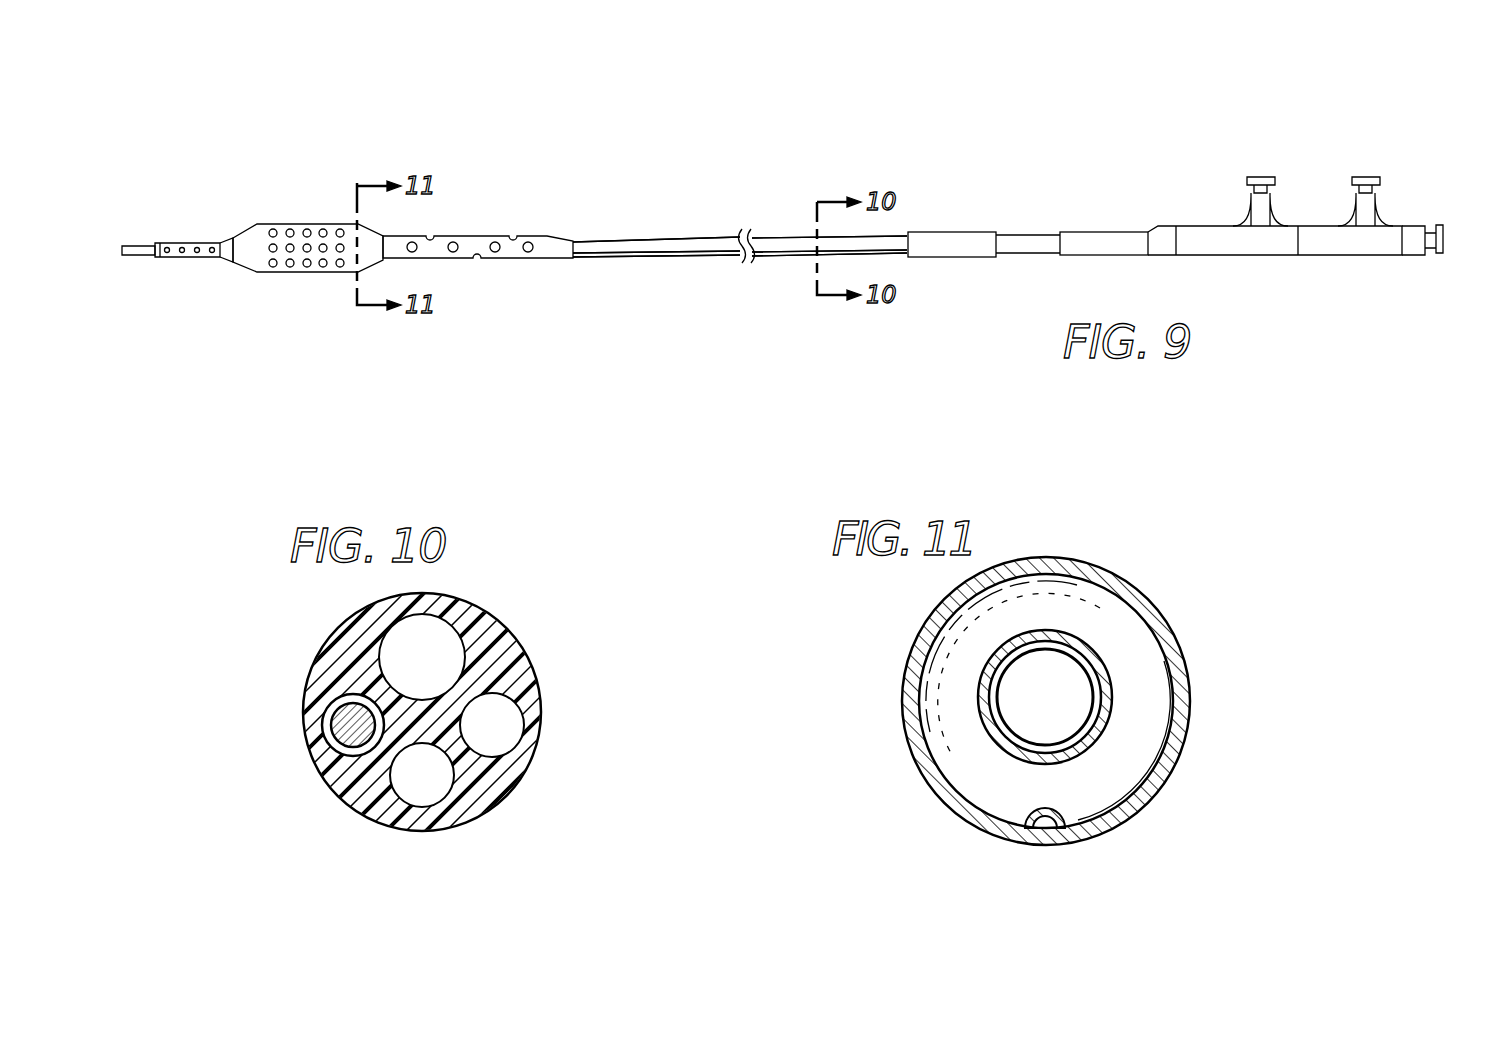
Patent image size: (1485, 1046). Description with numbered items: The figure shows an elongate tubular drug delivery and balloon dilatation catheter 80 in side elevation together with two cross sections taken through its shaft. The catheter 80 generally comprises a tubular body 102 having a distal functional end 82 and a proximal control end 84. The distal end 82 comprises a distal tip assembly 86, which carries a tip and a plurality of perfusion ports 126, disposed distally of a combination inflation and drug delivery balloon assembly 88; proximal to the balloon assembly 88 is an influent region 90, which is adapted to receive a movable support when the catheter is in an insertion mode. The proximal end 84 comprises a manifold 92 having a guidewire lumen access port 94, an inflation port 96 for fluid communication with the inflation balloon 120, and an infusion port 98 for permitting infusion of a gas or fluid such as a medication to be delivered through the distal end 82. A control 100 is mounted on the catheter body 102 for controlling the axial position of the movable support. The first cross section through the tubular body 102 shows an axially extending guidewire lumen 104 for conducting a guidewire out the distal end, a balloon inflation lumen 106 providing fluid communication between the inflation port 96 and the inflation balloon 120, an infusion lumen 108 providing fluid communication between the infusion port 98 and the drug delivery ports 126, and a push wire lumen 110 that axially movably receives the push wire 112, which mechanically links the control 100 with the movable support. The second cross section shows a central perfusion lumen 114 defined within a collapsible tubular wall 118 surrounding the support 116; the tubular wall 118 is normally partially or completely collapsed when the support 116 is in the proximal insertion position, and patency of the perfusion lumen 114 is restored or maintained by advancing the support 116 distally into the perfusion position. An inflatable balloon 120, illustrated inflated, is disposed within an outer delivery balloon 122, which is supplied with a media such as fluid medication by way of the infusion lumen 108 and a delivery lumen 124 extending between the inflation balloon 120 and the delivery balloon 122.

In FIG. 9, the drug delivery and balloon dilatation catheter 80 is at (620, 185).
In FIG. 9, the distal functional end 82 is at (302, 195).
In FIG. 9, the proximal control end 84 is at (1313, 184).
In FIG. 9, the distal tip assembly 86 is at (180, 292).
In FIG. 9, the combination inflation and drug delivery balloon assembly 88 is at (322, 231).
In FIG. 9, the influent region 90 is at (486, 292).
In FIG. 9, the manifold 92 is at (1262, 250).
In FIG. 9, the guidewire lumen access port 94 is at (1443, 236).
In FIG. 9, the inflation port 96 is at (1265, 177).
In FIG. 9, the infusion port 98 is at (1365, 172).
In FIG. 9, the control 100 is at (955, 248).
In FIG. 9, the tubular body 102 is at (630, 256).
In FIG. 10, the tubular body 102 is at (522, 640).
In FIG. 10, the guidewire lumen 104 is at (430, 648).
In FIG. 10, the balloon inflation lumen 106 is at (500, 725).
In FIG. 10, the infusion lumen 108 is at (432, 790).
In FIG. 10, the push wire lumen 110 is at (352, 697).
In FIG. 10, the push wire 112 is at (360, 733).
In FIG. 11, the central perfusion lumen 114 is at (1060, 688).
In FIG. 11, the support 116 is at (1097, 738).
In FIG. 11, the collapsible tubular wall 118 is at (1078, 642).
In FIG. 11, the inflatable balloon 120 is at (1035, 560).
In FIG. 11, the outer delivery balloon 122 is at (1026, 689).
In FIG. 11, the delivery lumen 124 is at (1045, 825).
In FIG. 9, the perfusion ports 126 is at (323, 229).